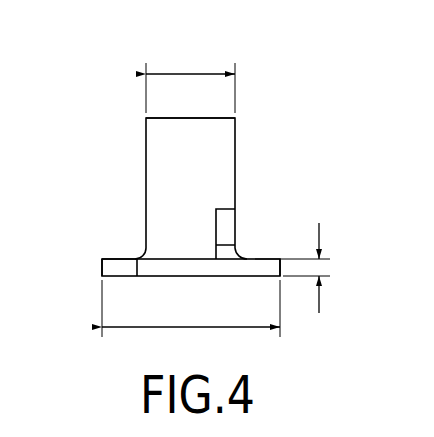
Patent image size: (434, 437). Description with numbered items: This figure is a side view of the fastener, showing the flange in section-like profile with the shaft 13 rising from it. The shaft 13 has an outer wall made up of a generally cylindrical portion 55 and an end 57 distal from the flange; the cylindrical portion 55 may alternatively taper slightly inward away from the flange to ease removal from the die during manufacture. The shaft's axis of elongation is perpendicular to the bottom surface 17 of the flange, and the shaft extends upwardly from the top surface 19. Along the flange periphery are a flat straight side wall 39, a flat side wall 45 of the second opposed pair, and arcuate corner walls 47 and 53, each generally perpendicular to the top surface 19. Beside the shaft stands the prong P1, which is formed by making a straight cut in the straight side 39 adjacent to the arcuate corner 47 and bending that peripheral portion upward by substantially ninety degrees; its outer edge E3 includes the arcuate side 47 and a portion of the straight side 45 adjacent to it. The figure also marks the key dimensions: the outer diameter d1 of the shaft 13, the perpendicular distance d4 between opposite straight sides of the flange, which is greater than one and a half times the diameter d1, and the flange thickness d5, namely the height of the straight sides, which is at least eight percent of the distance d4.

The shaft 13 is at (244, 188).
The generally cylindrical portion 55 is at (235, 158).
The end 57 is at (213, 118).
The prong P1 is at (303, 221).
The arcuate side wall 47 is at (303, 221).
The outer edge E3 is at (227, 233).
The bottom surface 17 is at (247, 276).
The flat side wall 45 is at (158, 268).
The top surface 19 is at (118, 258).
The arcuate side wall 53 is at (102, 268).
The flat side wall 39 is at (283, 270).
The outer diameter d1 is at (190, 79).
The perpendicular distance between opposite straight sides d4 is at (191, 320).
The thickness of the flange d5 is at (307, 268).